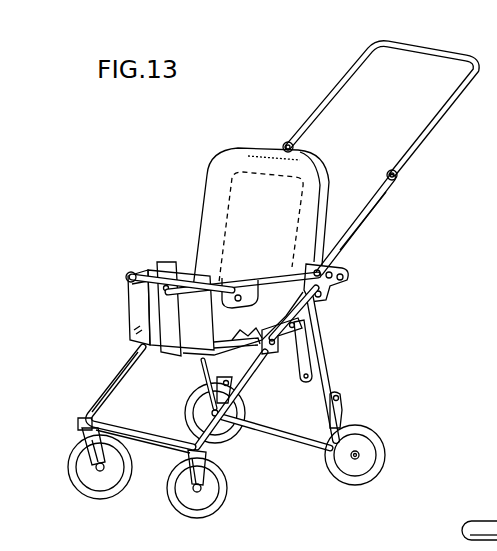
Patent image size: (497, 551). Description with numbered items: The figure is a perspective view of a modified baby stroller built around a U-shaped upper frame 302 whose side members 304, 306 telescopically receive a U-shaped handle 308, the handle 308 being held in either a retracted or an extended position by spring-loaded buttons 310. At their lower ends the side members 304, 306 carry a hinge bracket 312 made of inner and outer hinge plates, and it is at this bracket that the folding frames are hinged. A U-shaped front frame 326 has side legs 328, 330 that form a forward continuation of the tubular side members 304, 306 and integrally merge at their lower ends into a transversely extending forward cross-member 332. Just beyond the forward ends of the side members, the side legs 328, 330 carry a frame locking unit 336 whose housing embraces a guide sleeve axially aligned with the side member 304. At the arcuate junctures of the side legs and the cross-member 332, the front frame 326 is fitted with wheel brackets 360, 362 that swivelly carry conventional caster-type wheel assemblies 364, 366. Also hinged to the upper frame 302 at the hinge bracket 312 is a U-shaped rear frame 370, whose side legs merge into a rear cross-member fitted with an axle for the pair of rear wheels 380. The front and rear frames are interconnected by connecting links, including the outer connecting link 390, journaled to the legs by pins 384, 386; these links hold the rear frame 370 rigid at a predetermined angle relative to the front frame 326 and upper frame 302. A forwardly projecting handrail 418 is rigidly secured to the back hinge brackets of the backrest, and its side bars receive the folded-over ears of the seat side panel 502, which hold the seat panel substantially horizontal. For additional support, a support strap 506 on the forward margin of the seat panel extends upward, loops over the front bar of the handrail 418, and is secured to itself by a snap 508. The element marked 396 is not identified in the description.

The U-shaped upper frame 302 is at (392, 190).
The side member 304 is at (366, 222).
The side member 306 is at (282, 143).
The U-shaped handle 308 is at (347, 82).
The spring-loaded button 310 is at (386, 174).
The hinge bracket 312 is at (305, 305).
The U-shaped front frame 326 is at (112, 382).
The side leg 328 is at (207, 450).
The side leg 330 is at (98, 398).
The forward cross-member 332 is at (165, 452).
The frame locking unit 336 is at (256, 357).
The wheel bracket 360 is at (143, 474).
The wheel bracket 362 is at (80, 422).
The caster-type wheel assembly 364 is at (206, 505).
The caster-type wheel assembly 366 is at (92, 493).
The U-shaped rear frame 370 is at (334, 382).
The rear wheel 380 is at (386, 455).
The pin 384 is at (207, 163).
The pin 386 is at (200, 208).
The outer connecting link 390 is at (292, 355).
The seat pan 396 is at (136, 344).
The handrail 418 is at (132, 272).
The side panel 502 is at (135, 323).
The support strap 506 is at (157, 307).
The snap 508 is at (135, 284).